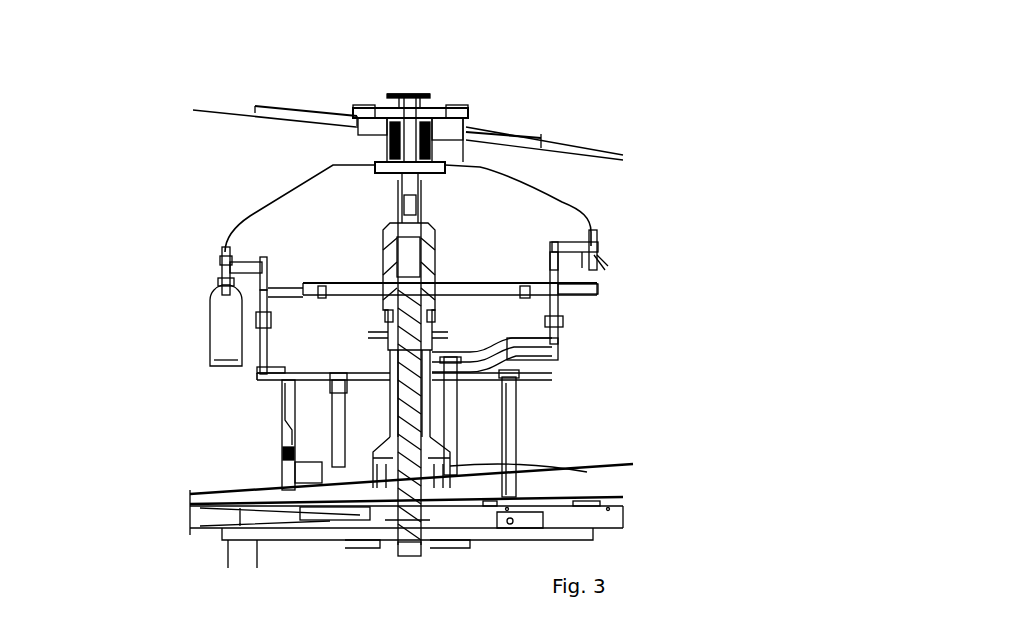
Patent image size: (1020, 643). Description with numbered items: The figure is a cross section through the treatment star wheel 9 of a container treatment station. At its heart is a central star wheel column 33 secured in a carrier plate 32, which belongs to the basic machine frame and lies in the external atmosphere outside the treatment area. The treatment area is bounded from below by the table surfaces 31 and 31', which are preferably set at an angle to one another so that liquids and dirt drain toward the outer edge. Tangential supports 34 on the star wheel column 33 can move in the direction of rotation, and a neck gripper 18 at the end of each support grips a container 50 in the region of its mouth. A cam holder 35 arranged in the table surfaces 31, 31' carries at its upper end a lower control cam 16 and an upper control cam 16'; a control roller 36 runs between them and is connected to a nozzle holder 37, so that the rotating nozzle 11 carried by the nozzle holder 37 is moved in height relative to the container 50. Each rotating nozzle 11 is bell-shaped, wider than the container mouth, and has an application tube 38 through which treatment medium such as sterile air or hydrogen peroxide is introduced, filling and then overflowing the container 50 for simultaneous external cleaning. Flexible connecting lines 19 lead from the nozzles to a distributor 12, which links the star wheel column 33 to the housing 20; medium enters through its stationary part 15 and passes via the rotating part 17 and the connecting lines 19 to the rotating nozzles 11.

The treatment star wheel 9 is at (166, 164).
The rotating nozzle 11 is at (600, 258).
The distributor 12 is at (411, 96).
The stationary part 15 is at (393, 100).
The lower control cam 16 is at (510, 378).
The upper control cam 16' is at (546, 363).
The rotating part 17 is at (465, 145).
The neck gripper 18 is at (266, 283).
The connecting line 19 is at (278, 200).
The housing 20 is at (592, 152).
The table surface 31 is at (347, 499).
The table surface 31' is at (604, 473).
The carrier plate 32 is at (303, 532).
The star wheel column 33 is at (388, 363).
The tangential support 34 is at (451, 283).
The cam holder 35 is at (518, 455).
The control roller 36 is at (260, 372).
The nozzle holder 37 is at (560, 245).
The application tube 38 is at (605, 270).
The container 50 is at (211, 325).